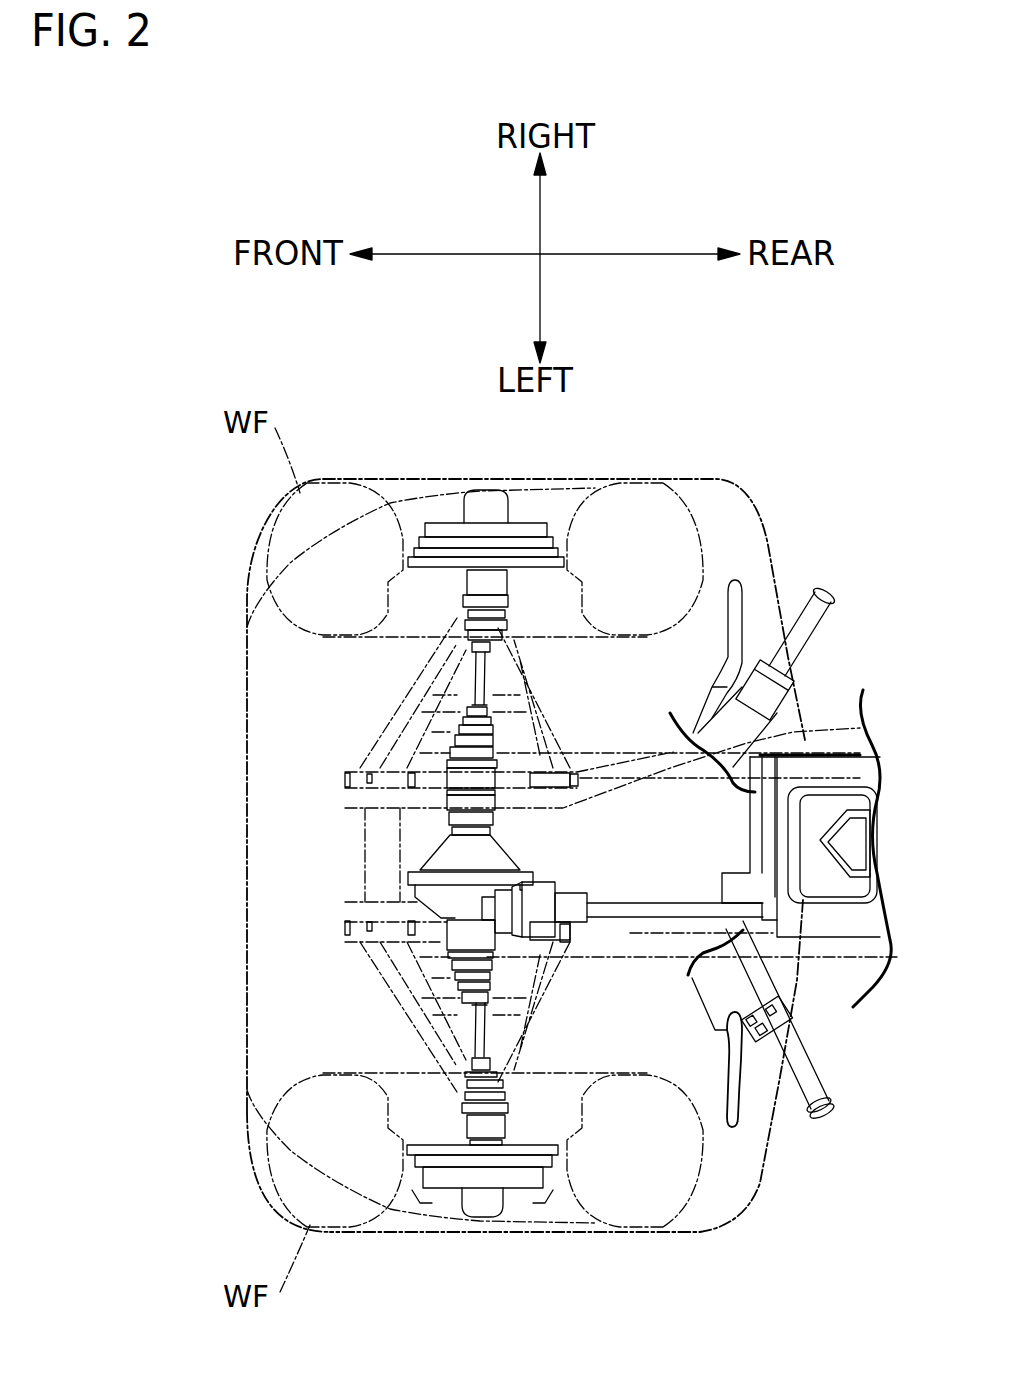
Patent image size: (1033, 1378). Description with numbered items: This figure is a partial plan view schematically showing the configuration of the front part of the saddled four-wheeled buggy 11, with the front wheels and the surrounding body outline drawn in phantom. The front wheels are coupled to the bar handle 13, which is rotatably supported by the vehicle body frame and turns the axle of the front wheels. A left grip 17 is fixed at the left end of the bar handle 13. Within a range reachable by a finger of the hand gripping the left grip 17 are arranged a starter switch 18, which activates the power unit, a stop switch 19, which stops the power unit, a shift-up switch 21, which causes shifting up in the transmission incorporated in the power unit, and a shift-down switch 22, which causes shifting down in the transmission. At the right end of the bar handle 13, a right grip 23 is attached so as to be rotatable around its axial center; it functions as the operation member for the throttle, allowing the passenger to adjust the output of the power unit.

The four-wheeled buggy 11 is at (753, 462).
The bar handle 13 is at (730, 987).
The left grip 17 is at (808, 1083).
The starter switch 18 is at (736, 938).
The stop switch 19 is at (787, 1003).
The shift-up switch 21 is at (727, 1030).
The shift-down switch 22 is at (793, 1010).
The right grip 23 is at (790, 640).